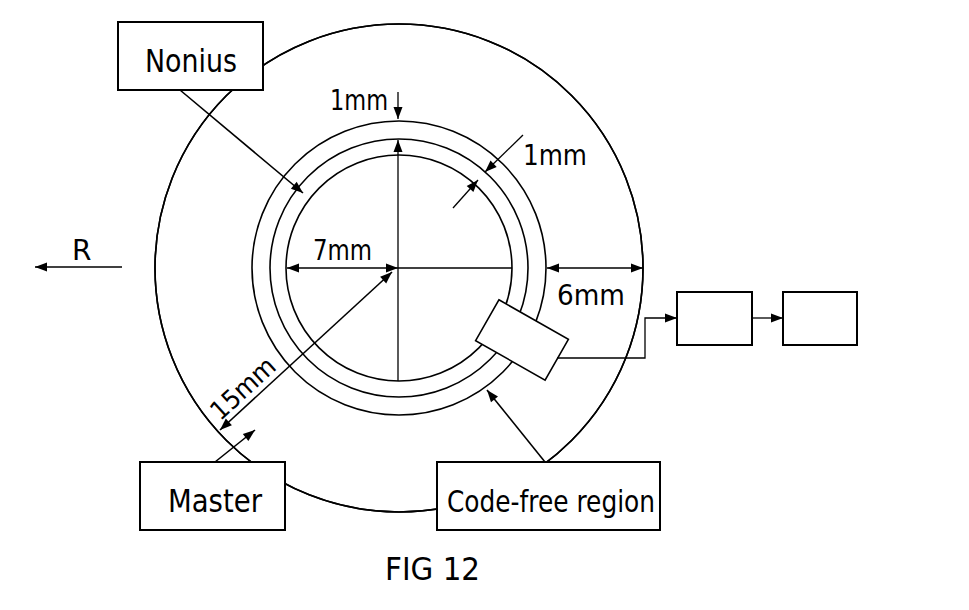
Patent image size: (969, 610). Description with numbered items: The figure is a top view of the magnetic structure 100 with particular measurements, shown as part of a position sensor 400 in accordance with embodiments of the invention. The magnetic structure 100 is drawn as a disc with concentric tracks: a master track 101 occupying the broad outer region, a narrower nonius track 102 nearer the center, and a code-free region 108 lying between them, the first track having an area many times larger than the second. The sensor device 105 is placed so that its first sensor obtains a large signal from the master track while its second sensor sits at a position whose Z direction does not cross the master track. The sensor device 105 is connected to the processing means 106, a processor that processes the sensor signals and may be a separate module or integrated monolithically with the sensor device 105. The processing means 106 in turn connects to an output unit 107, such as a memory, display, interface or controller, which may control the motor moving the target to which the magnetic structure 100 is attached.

The magnetic structure 100 is at (172, 156).
The master code track 101 is at (200, 385).
The nonius code track 102 is at (443, 153).
The sensor device 105 is at (500, 323).
The processing means 106 is at (741, 338).
The output unit 107 is at (847, 338).
The code-free region 108 is at (263, 297).
The position sensor 400 is at (722, 200).